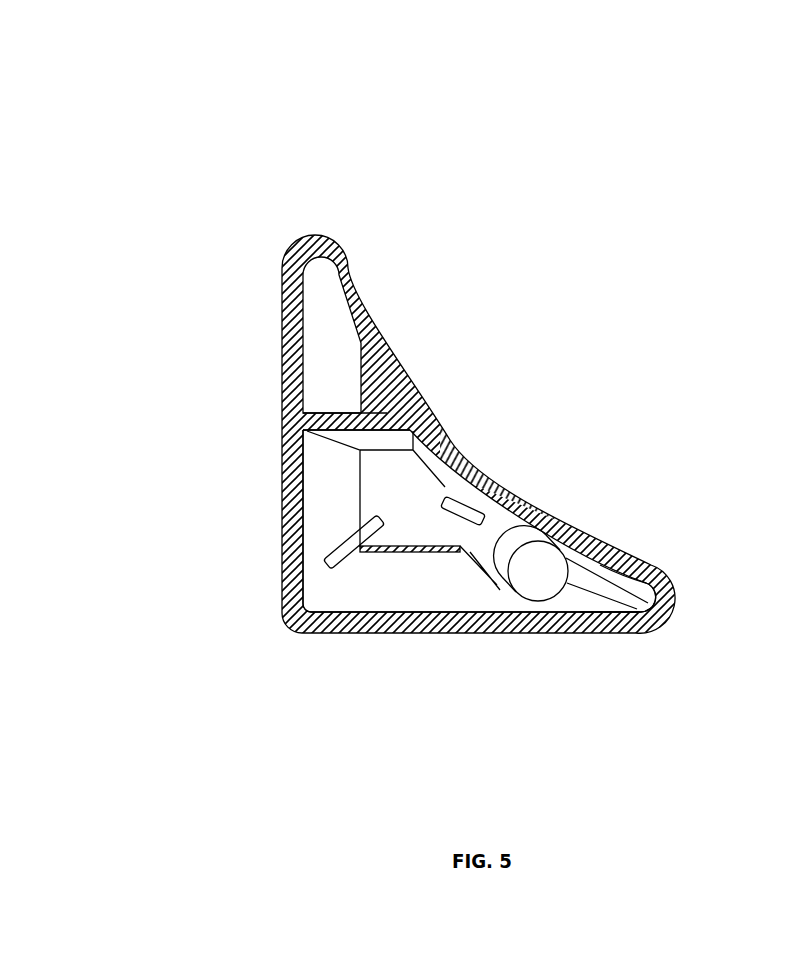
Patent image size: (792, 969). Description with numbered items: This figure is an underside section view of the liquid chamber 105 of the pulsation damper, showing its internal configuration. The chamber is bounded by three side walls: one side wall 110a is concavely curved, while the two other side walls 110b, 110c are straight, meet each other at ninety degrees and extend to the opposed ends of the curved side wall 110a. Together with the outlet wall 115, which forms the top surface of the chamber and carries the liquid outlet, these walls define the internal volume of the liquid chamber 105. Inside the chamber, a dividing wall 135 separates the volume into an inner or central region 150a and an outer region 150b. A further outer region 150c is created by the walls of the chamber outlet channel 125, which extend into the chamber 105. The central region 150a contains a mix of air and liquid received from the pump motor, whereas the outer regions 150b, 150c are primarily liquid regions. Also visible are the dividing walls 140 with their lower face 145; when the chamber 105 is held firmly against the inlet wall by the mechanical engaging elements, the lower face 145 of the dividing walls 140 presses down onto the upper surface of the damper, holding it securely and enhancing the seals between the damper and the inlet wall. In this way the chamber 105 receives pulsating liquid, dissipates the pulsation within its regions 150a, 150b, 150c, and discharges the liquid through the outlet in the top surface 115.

The liquid chamber 105 is at (397, 403).
The curved side wall 110a is at (407, 403).
The straight side wall 110b is at (507, 628).
The straight side wall 110c is at (287, 322).
The outlet wall 115 is at (377, 485).
The chamber outlet channel 125 is at (540, 570).
The dividing wall 135 is at (338, 412).
The dividing walls 140 is at (460, 513).
The lower face 145 is at (325, 558).
The central region 150a is at (333, 470).
The outer region 150b is at (328, 292).
The further outer region 150c is at (617, 580).